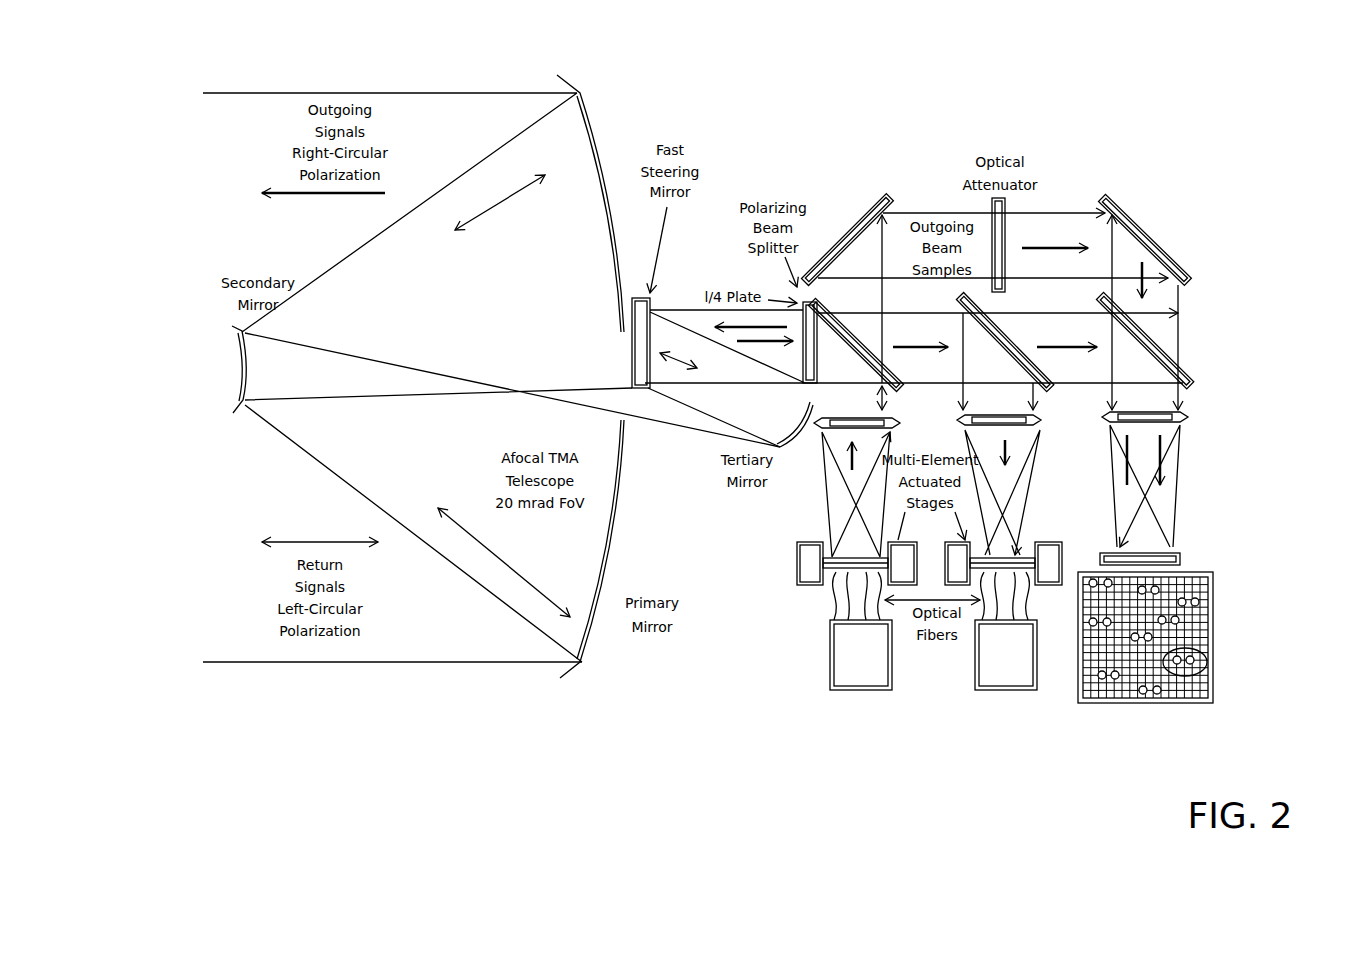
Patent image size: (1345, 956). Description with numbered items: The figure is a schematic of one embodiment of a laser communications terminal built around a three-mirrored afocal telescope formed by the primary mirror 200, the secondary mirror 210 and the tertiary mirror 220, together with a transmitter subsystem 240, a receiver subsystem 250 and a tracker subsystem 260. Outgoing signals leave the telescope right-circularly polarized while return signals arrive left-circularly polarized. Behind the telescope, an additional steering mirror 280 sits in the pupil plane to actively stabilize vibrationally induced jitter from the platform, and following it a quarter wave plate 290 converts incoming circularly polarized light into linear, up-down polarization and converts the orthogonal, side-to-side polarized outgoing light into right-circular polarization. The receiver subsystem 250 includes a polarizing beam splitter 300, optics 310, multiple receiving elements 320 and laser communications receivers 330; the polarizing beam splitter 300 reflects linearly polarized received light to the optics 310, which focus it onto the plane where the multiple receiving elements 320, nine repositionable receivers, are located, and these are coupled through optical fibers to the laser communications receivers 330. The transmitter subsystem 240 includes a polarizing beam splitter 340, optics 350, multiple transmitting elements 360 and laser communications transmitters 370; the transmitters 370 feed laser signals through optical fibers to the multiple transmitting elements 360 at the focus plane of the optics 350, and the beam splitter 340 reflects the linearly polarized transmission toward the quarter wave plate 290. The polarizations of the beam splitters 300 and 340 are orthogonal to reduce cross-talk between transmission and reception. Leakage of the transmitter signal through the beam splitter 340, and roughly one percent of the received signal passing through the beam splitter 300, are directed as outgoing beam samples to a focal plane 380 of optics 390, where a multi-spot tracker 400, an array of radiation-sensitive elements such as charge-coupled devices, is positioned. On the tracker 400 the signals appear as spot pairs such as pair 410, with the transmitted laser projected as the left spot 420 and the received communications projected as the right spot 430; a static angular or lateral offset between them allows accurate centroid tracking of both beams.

The primary mirror 200 is at (588, 106).
The secondary mirror 210 is at (243, 380).
The tertiary mirror 220 is at (797, 453).
The transmitter subsystem 240 is at (860, 603).
The receiver subsystem 250 is at (1007, 603).
The tracker subsystem 260 is at (1170, 594).
The steering mirror 280 is at (633, 349).
The quarter wave plate 290 is at (730, 296).
The polarizing beam splitter 300 is at (1017, 340).
The optics 310 is at (1043, 420).
The multiple receiving elements 320 is at (1032, 530).
The laser communications receivers 330 is at (977, 676).
The polarizing beam splitter 340 is at (855, 333).
The optics 350 is at (903, 421).
The multiple transmitting elements 360 is at (830, 540).
The laser communications transmitters 370 is at (832, 676).
The focal plane 380 is at (1177, 543).
The optics 390 is at (1187, 418).
The multi-spot tracker 400 is at (1170, 640).
The spot pair 410 is at (1202, 628).
The left spot 420 is at (1183, 680).
The right spot 430 is at (1190, 655).